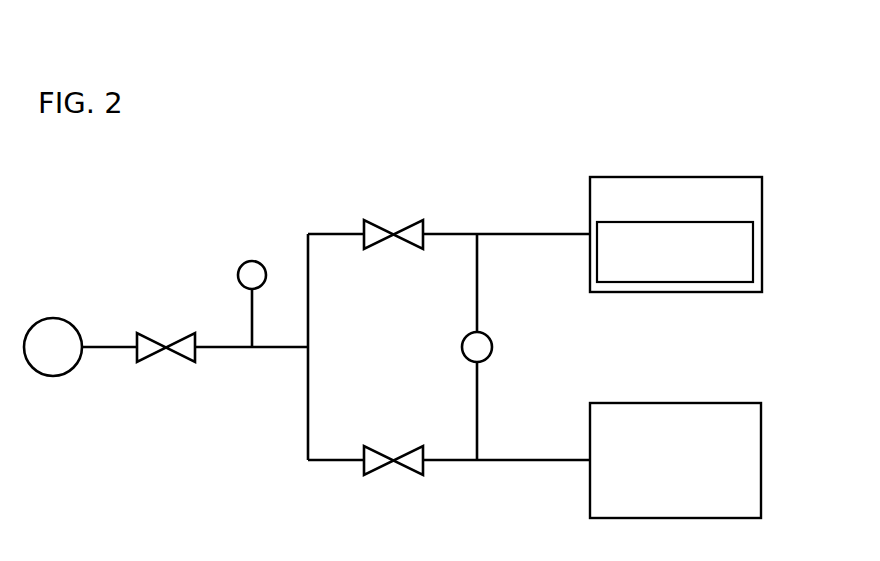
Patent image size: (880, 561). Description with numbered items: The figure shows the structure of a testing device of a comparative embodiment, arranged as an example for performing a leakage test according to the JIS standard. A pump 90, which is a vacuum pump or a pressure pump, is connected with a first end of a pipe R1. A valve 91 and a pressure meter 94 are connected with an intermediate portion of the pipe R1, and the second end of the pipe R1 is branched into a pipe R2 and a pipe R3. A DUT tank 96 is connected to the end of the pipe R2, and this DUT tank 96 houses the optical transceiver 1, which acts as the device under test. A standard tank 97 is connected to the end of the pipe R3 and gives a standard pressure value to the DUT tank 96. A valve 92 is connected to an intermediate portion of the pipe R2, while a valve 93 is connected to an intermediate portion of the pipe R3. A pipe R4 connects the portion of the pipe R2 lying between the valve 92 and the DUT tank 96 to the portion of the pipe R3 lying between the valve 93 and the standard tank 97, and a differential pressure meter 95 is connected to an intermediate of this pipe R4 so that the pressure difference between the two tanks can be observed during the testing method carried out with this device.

The optical transceiver 1 is at (704, 222).
The pump 90 is at (70, 326).
The valve 91 is at (196, 342).
The valve 92 is at (424, 230).
The valve 93 is at (424, 458).
The pressure meter 94 is at (243, 265).
The differential pressure meter 95 is at (490, 334).
The DUT tank 96 is at (733, 176).
The standard tank 97 is at (733, 403).
The pipe R1 is at (262, 346).
The pipe R2 is at (533, 233).
The pipe R3 is at (535, 460).
The pipe R4 is at (478, 417).